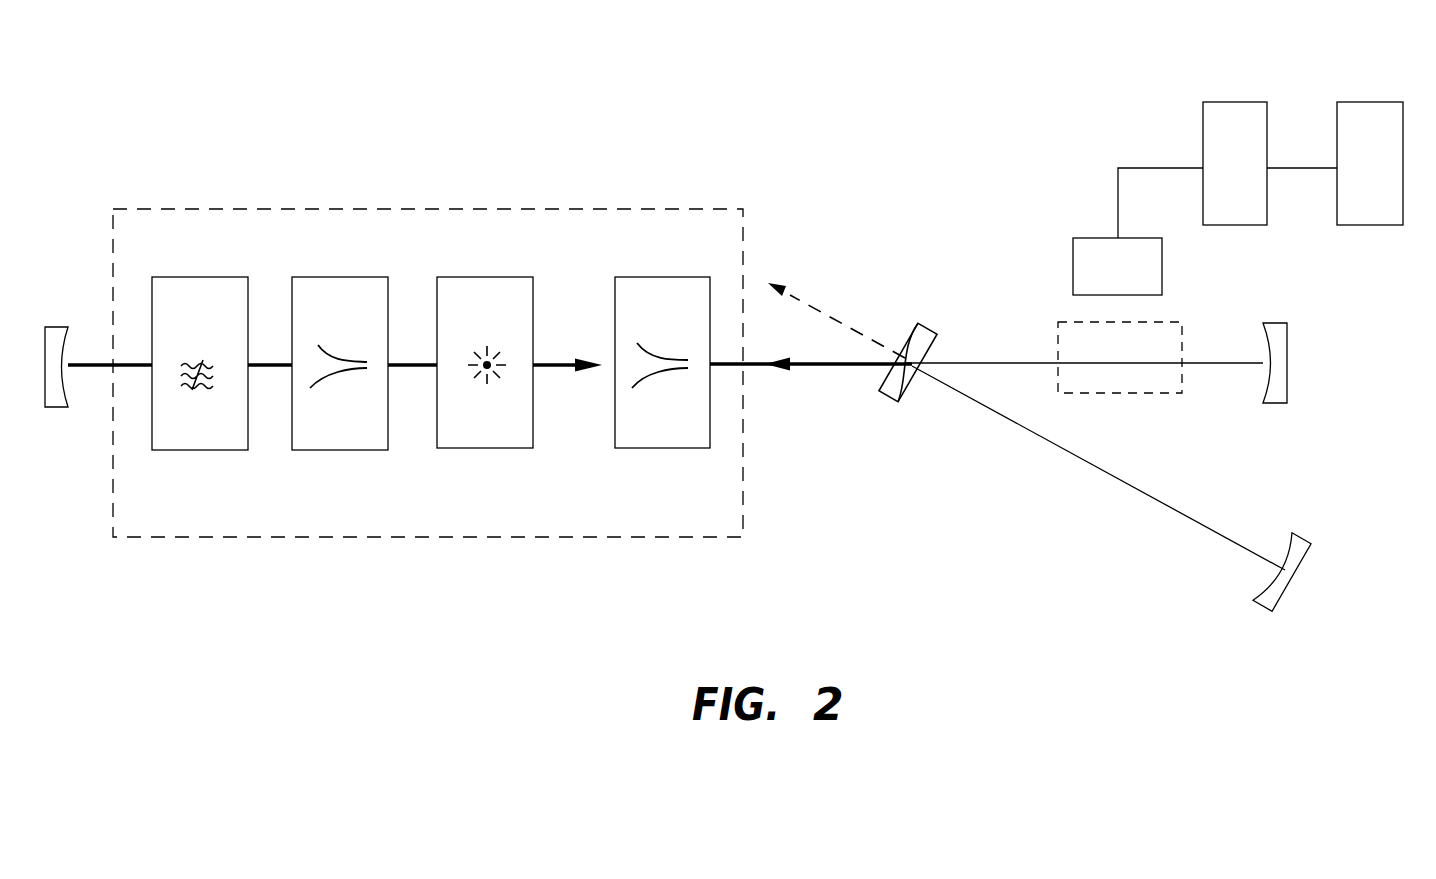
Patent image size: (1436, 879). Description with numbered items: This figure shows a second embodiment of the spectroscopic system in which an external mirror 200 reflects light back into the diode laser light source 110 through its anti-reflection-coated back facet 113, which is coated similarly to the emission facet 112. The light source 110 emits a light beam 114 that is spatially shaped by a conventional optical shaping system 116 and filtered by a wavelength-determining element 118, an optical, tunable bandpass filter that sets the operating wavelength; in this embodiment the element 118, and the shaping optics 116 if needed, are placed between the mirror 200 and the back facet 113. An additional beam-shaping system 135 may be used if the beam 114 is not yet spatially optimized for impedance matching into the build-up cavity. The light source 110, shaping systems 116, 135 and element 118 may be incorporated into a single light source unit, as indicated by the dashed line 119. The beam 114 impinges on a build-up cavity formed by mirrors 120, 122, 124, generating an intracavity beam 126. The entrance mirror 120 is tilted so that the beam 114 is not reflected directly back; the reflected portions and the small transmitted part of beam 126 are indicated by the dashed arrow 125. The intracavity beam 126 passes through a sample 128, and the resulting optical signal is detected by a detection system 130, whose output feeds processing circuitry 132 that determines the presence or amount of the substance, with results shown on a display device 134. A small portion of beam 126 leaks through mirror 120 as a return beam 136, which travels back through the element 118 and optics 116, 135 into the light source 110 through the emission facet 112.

The mirror 200 is at (63, 327).
The wavelength-determining element 118 is at (205, 277).
The optical shaping system 116 is at (338, 277).
The emission facet 112 is at (493, 303).
The back facet 113 is at (437, 310).
The beam-shaping system 135 is at (655, 277).
The dashed line 119 is at (328, 210).
The light beam 114 is at (562, 367).
The light source 110 is at (483, 460).
The dashed arrow 125 is at (808, 308).
The mirror 120 is at (907, 332).
The return beam 136 is at (807, 372).
The intracavity beam 126 is at (1222, 363).
The sample 128 is at (1127, 393).
The mirror 122 is at (1287, 343).
The mirror 124 is at (1313, 543).
The detection system 130 is at (1073, 253).
The processing circuitry 132 is at (1203, 122).
The display device 134 is at (1365, 102).